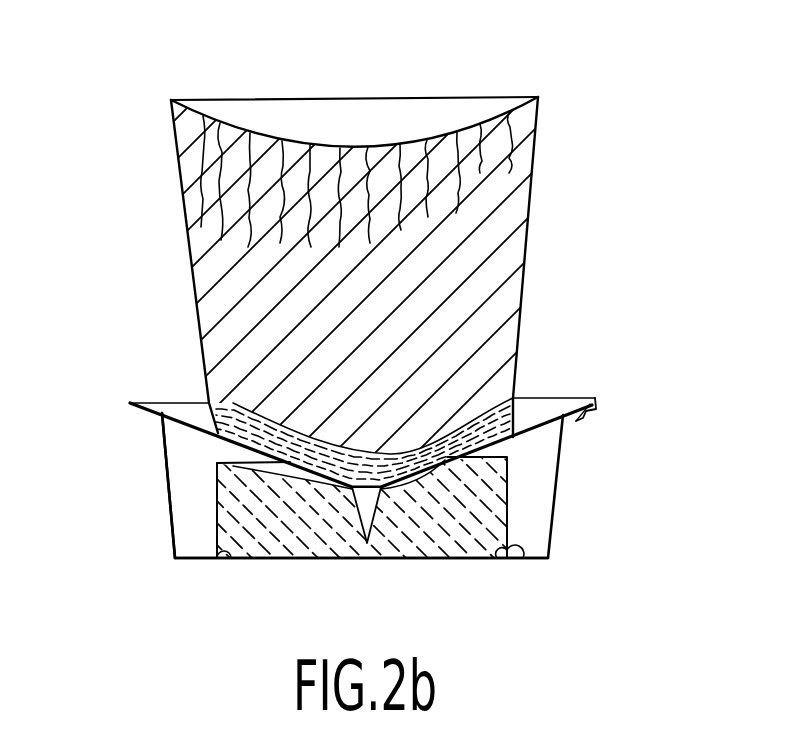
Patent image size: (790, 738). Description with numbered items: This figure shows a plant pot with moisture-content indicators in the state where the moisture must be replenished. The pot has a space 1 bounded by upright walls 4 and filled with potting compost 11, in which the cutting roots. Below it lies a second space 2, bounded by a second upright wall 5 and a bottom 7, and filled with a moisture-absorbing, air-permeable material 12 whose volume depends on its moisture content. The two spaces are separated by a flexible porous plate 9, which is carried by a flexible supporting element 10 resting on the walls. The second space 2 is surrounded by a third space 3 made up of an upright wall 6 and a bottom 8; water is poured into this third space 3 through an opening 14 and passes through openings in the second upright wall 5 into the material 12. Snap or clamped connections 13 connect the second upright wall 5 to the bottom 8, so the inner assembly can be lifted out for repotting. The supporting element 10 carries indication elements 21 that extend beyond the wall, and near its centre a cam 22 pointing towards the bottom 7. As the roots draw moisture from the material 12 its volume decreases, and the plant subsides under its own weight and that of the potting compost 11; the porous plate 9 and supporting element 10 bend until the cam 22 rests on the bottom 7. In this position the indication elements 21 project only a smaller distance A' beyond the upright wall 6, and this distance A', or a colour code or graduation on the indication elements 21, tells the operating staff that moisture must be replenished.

The space 1 is at (395, 325).
The upright wall 4 is at (192, 282).
The potting compost 11 is at (265, 317).
The porous plate 9 is at (232, 400).
The supporting element 10 is at (173, 403).
The opening 14 is at (545, 398).
The indication elements 21 is at (591, 398).
The distance A' is at (592, 450).
The second space 2 is at (357, 535).
The second upright wall 5 is at (213, 513).
The material 12 is at (257, 523).
The cam 22 is at (367, 553).
The third space 3 is at (193, 527).
The upright wall 6 is at (172, 547).
The bottom 8 is at (197, 558).
The bottom 7 is at (452, 558).
The snap connections or clamped connections 13 is at (523, 558).